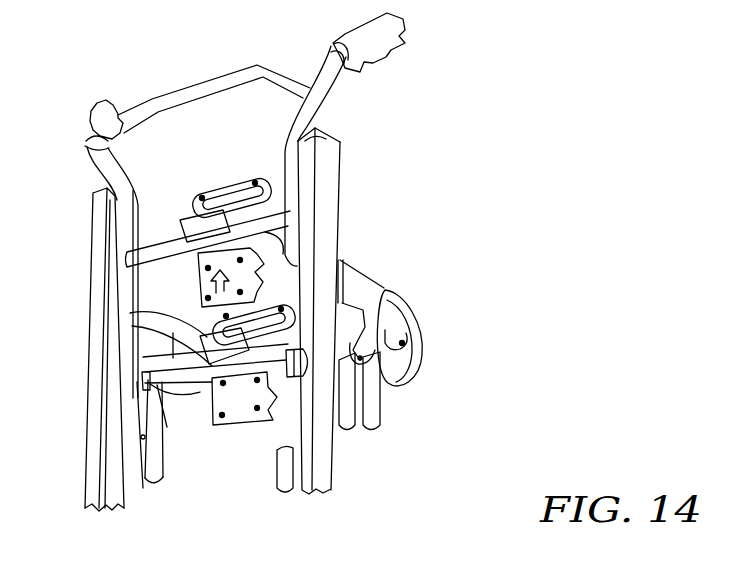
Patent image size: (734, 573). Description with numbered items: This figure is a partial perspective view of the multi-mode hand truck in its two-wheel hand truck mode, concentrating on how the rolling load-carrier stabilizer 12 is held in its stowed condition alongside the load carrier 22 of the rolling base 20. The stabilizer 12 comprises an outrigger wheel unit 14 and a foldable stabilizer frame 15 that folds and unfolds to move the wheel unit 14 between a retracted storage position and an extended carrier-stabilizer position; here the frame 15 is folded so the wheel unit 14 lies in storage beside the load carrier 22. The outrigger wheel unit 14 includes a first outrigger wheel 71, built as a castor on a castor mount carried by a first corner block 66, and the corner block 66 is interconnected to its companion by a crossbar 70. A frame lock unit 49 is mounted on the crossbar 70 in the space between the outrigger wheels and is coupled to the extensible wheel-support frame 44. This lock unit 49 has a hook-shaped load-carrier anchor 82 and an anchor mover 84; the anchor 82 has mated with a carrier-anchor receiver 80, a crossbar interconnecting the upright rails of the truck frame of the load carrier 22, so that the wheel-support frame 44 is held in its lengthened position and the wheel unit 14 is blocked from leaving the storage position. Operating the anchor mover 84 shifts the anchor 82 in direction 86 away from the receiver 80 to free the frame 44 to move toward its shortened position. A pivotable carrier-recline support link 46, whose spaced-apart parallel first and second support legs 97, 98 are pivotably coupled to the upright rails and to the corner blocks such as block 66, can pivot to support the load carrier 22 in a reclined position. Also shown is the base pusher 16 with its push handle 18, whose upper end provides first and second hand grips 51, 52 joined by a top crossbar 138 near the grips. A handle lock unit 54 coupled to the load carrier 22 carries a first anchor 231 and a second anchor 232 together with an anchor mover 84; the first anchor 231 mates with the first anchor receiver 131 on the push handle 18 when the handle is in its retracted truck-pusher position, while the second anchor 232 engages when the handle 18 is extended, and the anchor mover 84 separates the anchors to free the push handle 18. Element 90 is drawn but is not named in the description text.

The rolling load-carrier stabilizer 12 is at (334, 496).
The outrigger wheel unit 14 is at (437, 338).
The foldable stabilizer frame 15 is at (287, 263).
The base pusher 16 is at (82, 157).
The push handle 18 is at (359, 95).
The rolling base 20 is at (75, 517).
The load carrier 22 is at (77, 452).
The extensible wheel-support frame 44 is at (392, 418).
The pivotable carrier-recline support link 46 is at (172, 479).
The frame lock unit 49 is at (310, 338).
The first hand grip 51 is at (373, 33).
The second hand grip 52 is at (100, 104).
The handle lock unit 54 is at (230, 180).
The first corner block 66 is at (363, 263).
The crossbar 70 is at (170, 410).
The first outrigger wheel 71 is at (421, 309).
The carrier-anchor receiver 80 is at (157, 360).
The load-carrier anchor 82 is at (130, 313).
The anchor mover 84 is at (258, 174).
The direction 86 is at (297, 291).
The lower mounting plate 90 is at (277, 417).
The first support leg 97 is at (277, 481).
The second support leg 98 is at (153, 484).
The first anchor receiver 131 is at (163, 247).
The top crossbar 138 is at (197, 88).
The first anchor 231 is at (188, 215).
The second anchor 232 is at (297, 292).